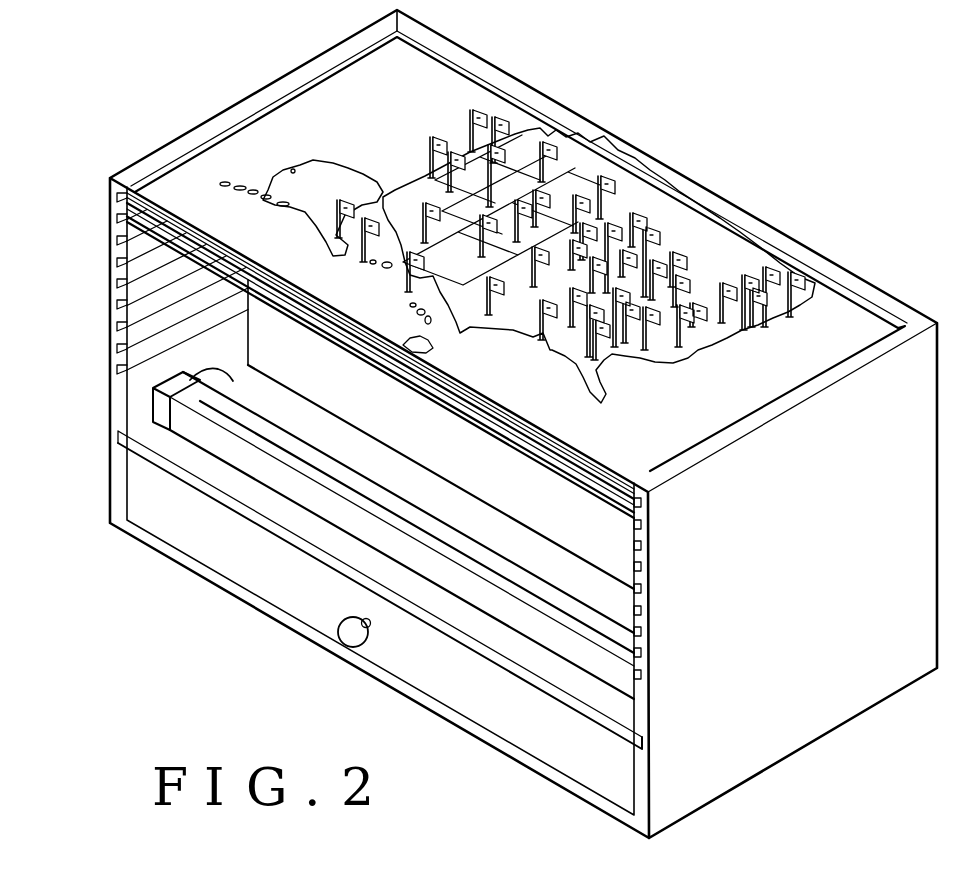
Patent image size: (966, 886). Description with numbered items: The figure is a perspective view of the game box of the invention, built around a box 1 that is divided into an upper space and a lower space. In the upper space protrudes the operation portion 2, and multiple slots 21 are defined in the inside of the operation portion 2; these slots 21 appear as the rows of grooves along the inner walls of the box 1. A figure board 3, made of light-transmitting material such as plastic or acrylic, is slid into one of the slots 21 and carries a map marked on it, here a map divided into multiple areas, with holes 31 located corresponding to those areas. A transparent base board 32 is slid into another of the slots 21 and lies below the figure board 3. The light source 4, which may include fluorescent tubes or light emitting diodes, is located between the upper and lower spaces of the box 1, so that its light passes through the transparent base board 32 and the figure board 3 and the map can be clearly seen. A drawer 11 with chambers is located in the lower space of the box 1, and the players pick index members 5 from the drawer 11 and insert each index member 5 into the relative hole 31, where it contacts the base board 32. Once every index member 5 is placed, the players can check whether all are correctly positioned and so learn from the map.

The box 1 is at (490, 738).
The drawer 11 is at (236, 563).
The operation portion 2 is at (705, 198).
The slots 21 is at (123, 313).
The figure board 3 is at (195, 180).
The holes 31 is at (330, 233).
The transparent base board 32 is at (160, 250).
The light source 4 is at (220, 403).
The index member 5 is at (508, 108).